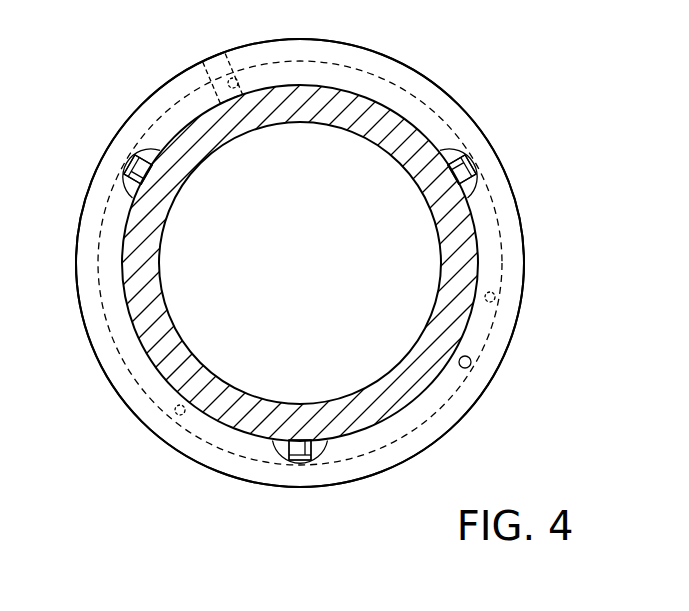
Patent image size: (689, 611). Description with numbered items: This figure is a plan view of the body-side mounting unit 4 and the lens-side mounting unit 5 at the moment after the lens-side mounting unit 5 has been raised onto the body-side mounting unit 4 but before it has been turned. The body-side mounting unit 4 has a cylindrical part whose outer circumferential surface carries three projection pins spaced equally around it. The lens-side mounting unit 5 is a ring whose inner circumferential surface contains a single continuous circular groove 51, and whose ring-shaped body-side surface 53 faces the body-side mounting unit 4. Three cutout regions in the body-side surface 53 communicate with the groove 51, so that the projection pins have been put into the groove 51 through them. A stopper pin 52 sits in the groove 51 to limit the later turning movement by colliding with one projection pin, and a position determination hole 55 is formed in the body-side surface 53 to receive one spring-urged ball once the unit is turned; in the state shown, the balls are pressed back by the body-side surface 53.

The body-side mounting unit 4 is at (324, 113).
The lens-side mounting unit 5 is at (374, 42).
The groove 51 is at (408, 88).
The stopper pin 52 is at (216, 62).
The body-side surface 53 is at (515, 214).
The position determination hole 55 is at (471, 365).